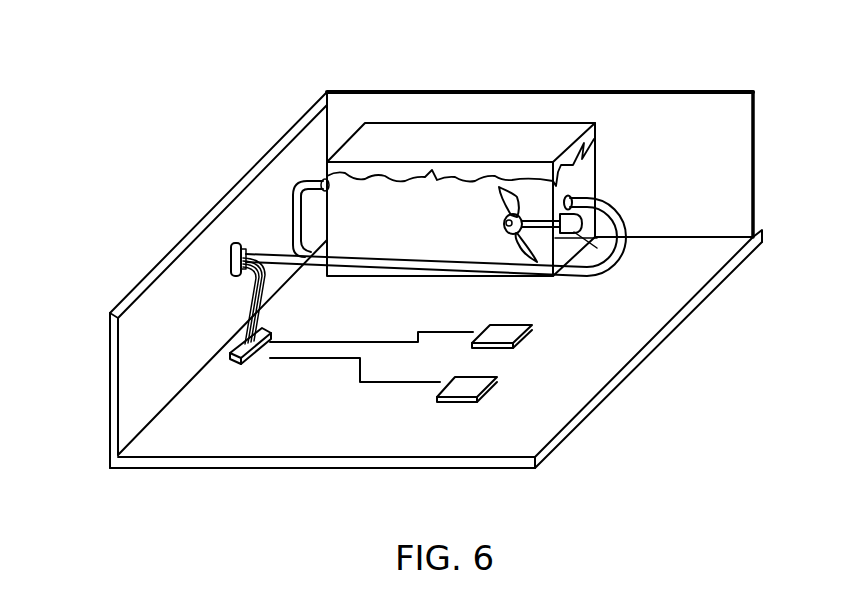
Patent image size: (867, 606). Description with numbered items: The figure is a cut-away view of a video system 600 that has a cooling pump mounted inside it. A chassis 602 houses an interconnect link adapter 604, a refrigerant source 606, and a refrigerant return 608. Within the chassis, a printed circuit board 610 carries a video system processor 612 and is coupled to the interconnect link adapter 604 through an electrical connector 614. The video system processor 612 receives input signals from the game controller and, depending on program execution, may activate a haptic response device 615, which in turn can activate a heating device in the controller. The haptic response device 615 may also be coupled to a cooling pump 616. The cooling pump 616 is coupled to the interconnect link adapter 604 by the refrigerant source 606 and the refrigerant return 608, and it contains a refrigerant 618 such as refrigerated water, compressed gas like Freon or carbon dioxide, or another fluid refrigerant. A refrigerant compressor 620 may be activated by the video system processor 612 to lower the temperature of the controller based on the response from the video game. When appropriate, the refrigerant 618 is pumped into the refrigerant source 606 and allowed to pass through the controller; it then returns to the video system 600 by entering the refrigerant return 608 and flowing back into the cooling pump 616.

The video system 600 is at (212, 55).
The chassis 602 is at (120, 408).
The interconnect link adapter 604 is at (233, 243).
The refrigerant source 606 is at (297, 213).
The refrigerant return 608 is at (623, 223).
The printed circuit board 610 is at (298, 430).
The video system processor 612 is at (473, 387).
The electrical connector 614 is at (240, 348).
The haptic response device 615 is at (510, 336).
The cooling pump 616 is at (462, 132).
The refrigerant 618 is at (398, 238).
The refrigerant compressor 620 is at (513, 205).